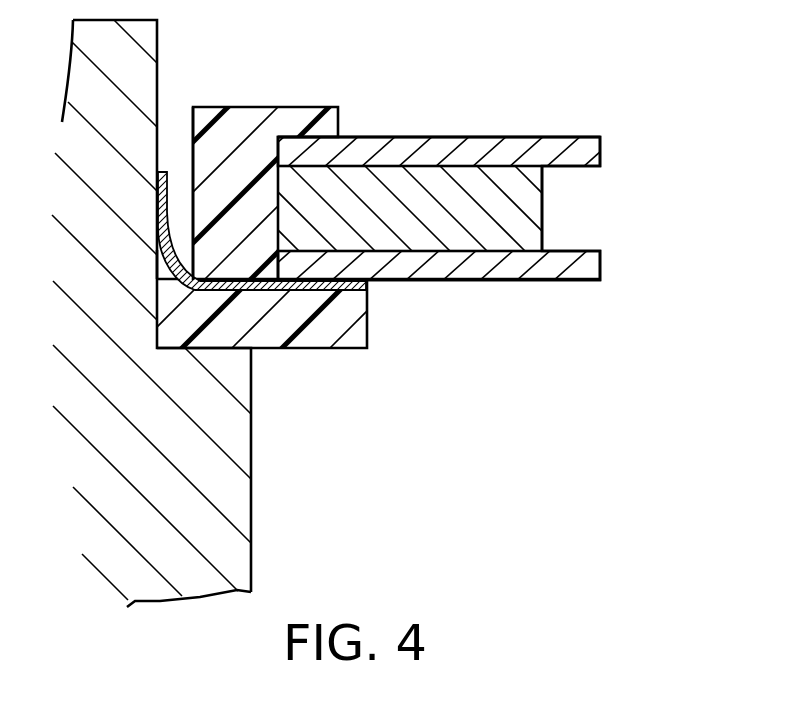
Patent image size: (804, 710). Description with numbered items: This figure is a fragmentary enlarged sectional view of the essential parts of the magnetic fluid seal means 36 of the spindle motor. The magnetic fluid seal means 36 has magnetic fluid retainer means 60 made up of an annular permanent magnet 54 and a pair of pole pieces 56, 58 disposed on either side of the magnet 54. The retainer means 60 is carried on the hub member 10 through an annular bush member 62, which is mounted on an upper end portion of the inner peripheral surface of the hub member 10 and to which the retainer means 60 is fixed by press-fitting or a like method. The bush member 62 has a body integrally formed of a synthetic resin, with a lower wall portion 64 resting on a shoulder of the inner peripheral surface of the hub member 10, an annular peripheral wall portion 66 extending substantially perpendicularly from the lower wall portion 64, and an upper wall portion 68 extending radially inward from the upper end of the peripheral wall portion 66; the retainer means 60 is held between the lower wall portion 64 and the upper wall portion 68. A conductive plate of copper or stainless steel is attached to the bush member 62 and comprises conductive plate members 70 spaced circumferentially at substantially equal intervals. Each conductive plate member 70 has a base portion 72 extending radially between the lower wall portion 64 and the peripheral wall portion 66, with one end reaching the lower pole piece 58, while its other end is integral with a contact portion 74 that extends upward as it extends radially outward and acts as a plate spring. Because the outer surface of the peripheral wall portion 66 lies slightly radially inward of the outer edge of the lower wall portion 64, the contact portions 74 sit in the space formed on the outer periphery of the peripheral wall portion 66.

The hub member 10 is at (253, 526).
The magnetic fluid seal means 36 is at (380, 103).
The annular permanent magnet 54 is at (535, 213).
The pole piece 56 is at (490, 136).
The pole piece 58 is at (500, 281).
The magnetic fluid retainer means 60 is at (430, 129).
The annular bush member 62 is at (256, 102).
The lower wall portion 64 is at (334, 329).
The annular peripheral wall portion 66 is at (192, 153).
The upper wall portion 68 is at (307, 107).
The conductive plate member 70 is at (152, 269).
The base portion 72 is at (283, 291).
The contact portion 74 is at (157, 203).